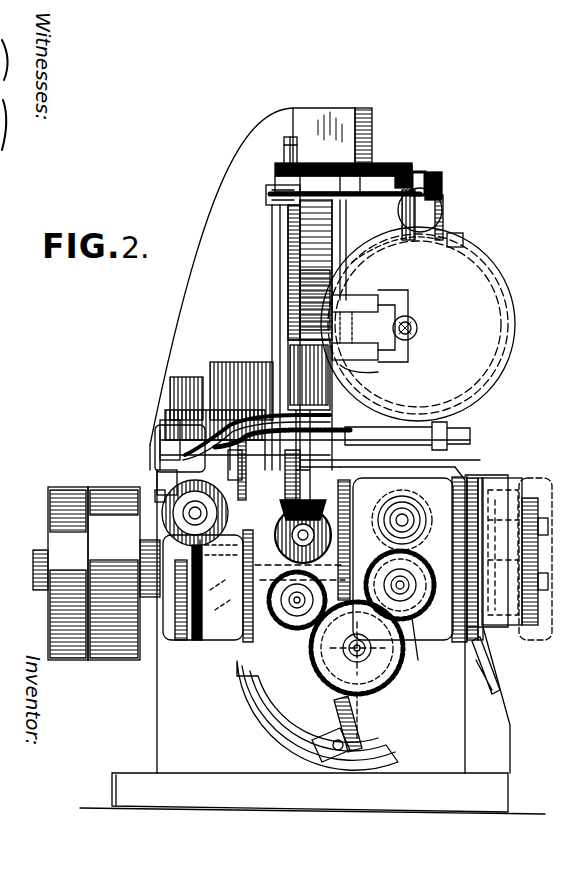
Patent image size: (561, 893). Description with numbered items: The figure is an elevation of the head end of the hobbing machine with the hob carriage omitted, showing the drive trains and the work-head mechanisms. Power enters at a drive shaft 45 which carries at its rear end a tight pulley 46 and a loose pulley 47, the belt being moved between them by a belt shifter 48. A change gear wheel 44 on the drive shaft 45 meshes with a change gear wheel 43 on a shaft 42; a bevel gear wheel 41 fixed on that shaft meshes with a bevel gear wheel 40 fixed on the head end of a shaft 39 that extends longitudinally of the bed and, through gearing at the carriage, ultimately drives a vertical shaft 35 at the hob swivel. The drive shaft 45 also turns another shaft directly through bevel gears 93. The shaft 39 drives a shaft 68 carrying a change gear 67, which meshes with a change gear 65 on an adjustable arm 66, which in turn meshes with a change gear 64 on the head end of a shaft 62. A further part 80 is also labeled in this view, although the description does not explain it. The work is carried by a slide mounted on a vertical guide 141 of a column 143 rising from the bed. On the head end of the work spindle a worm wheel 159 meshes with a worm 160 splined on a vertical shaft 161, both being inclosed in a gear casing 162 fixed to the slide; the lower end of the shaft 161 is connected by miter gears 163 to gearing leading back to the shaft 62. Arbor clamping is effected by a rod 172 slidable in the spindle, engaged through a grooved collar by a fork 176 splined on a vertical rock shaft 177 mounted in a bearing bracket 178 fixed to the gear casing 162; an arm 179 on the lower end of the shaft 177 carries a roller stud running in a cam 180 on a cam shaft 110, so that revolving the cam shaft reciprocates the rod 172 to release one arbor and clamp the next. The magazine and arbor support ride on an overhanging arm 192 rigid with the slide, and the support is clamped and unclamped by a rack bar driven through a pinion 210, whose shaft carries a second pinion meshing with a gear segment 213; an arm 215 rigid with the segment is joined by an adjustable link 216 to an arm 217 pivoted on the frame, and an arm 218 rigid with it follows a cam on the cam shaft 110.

The vertical shaft 35 is at (33, 570).
The shaft 39 is at (400, 518).
The bevel gear wheel 40 is at (400, 495).
The bevel gear wheel 41 is at (466, 478).
The shaft 42 is at (505, 510).
The change gear wheel 43 is at (530, 500).
The change gear wheel 44 is at (532, 622).
The drive shaft 45 is at (498, 625).
The tight pulley 46 is at (118, 662).
The loose pulley 47 is at (66, 662).
The belt shifter 48 is at (158, 456).
The shaft 62 is at (290, 606).
The change gear 64 is at (297, 622).
The change gear 65 is at (348, 656).
The adjustable arm 66 is at (318, 745).
The change gear 67 is at (416, 640).
The shaft 68 is at (398, 582).
The lever 80 is at (300, 563).
The bevel gears 93 is at (222, 582).
The cam shaft 110 is at (193, 513).
The vertical guide 141 is at (365, 110).
The column 143 is at (338, 112).
The worm wheel 159 is at (500, 305).
The worm 160 is at (272, 296).
The vertical shaft 161 is at (290, 256).
The gear casing 162 is at (478, 275).
The miter gears 163 is at (312, 520).
The rod 172 is at (418, 328).
The fork 176 is at (388, 312).
The vertical rock shaft 177 is at (348, 288).
The bearing bracket 178 is at (355, 364).
The arm 179 is at (205, 447).
The cam 180 is at (160, 476).
The overhanging arm 192 is at (430, 214).
The pinion 210 is at (400, 165).
The gear segment 213 is at (290, 137).
The arm 215 is at (270, 190).
The link 216 is at (275, 226).
The arm 217 is at (284, 471).
The arm 218 is at (227, 474).